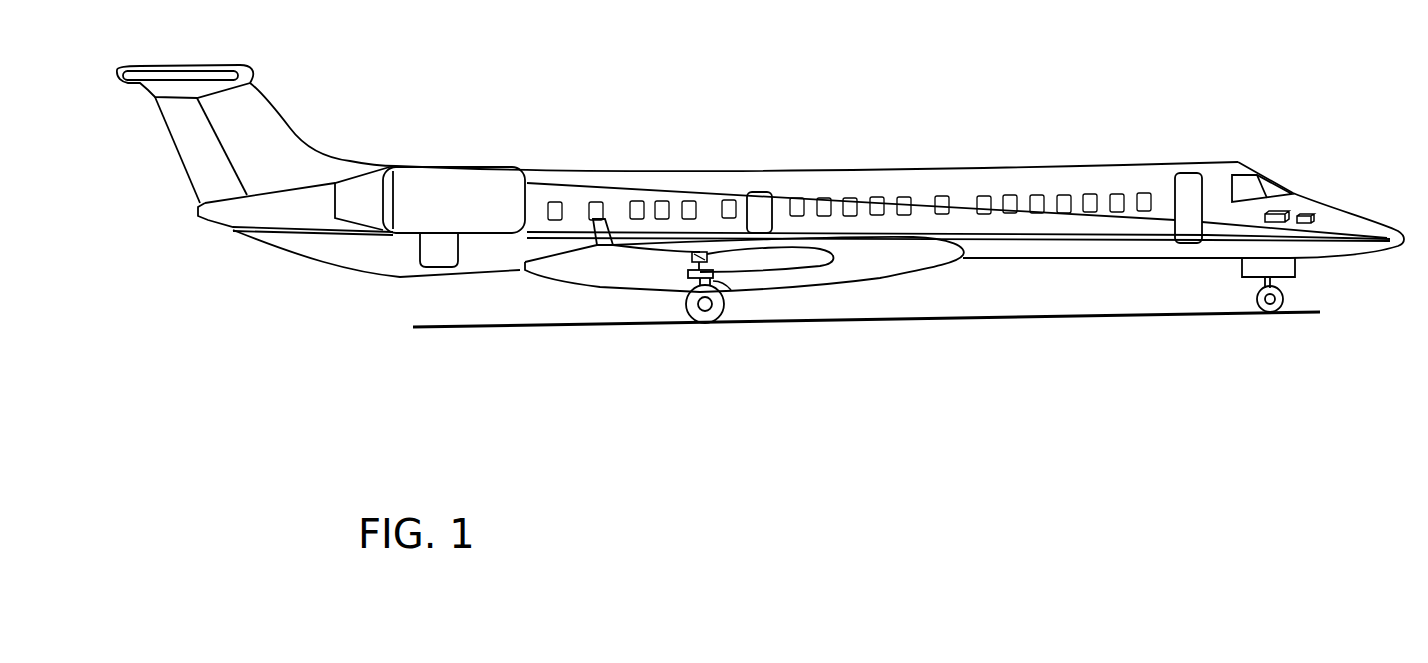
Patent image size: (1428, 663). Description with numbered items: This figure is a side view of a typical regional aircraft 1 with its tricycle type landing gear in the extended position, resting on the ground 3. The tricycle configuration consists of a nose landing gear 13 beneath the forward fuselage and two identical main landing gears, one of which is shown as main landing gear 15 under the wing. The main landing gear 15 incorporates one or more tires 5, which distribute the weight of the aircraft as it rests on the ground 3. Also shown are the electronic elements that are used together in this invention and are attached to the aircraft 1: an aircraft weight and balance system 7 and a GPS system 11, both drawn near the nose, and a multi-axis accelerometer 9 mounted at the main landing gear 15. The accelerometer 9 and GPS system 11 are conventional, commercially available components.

The regional aircraft 1 is at (1053, 247).
The ground 3 is at (955, 318).
The tire 5 is at (686, 297).
The aircraft weight and balance system 7 is at (1280, 213).
The multi-axis accelerometer 9 is at (694, 252).
The GPS system 11 is at (1315, 216).
The nose landing gear 13 is at (1255, 282).
The main landing gear 15 is at (720, 283).